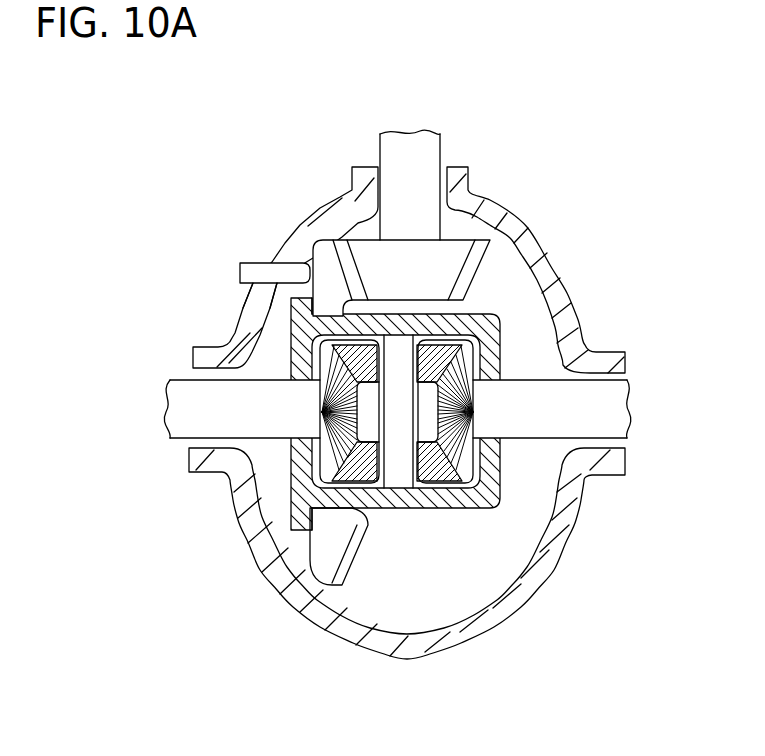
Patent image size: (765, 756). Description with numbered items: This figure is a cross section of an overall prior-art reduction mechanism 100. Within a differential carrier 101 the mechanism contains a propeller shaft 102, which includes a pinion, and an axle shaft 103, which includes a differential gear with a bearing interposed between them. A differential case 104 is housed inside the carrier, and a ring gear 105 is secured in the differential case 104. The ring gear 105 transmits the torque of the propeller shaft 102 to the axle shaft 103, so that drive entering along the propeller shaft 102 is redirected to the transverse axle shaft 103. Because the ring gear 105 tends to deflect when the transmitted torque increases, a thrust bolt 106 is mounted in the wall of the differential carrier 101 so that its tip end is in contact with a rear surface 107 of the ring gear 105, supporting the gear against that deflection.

The reduction mechanism 100 is at (439, 362).
The differential carrier 101 is at (557, 290).
The propeller shaft 102 is at (398, 147).
The axle shaft 103 is at (612, 410).
The differential case 104 is at (490, 362).
The ring gear 105 is at (323, 262).
The thrust bolt 106 is at (280, 273).
The rear surface 107 is at (245, 291).